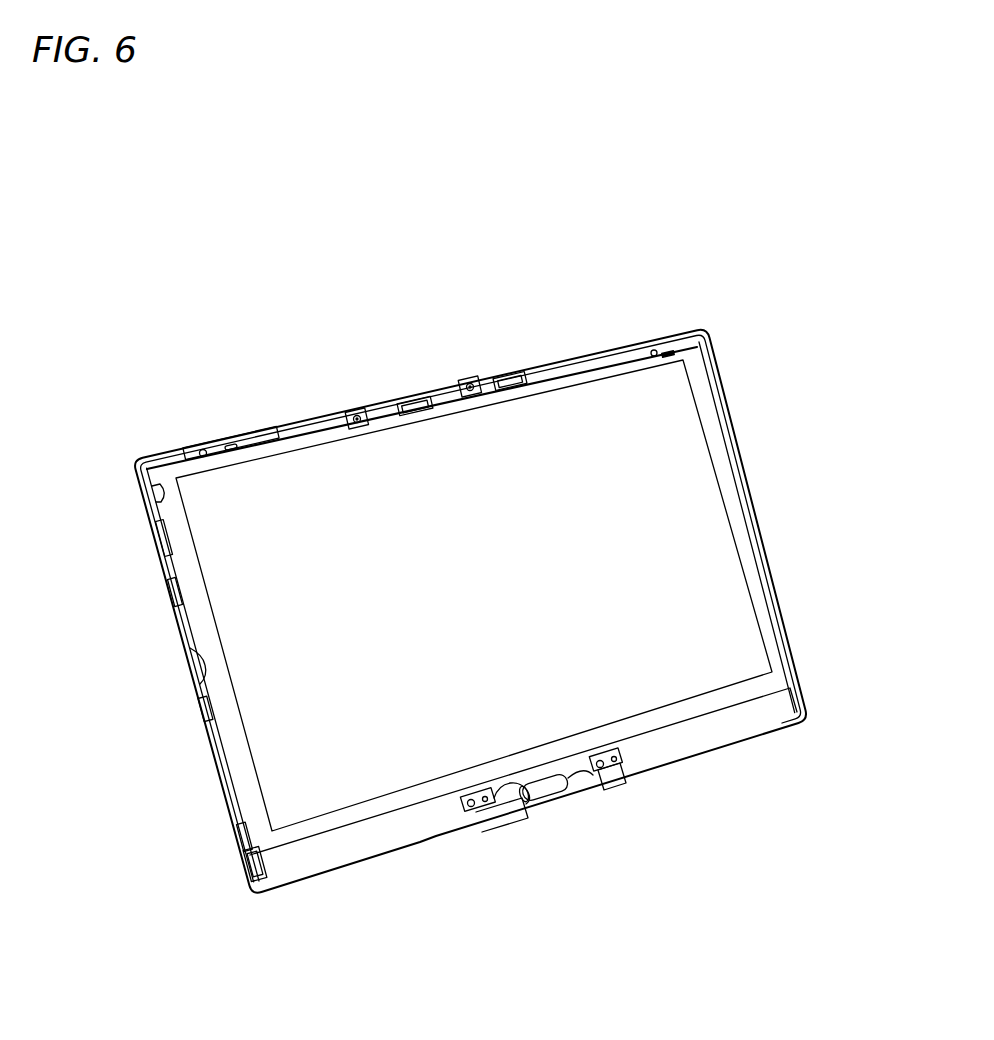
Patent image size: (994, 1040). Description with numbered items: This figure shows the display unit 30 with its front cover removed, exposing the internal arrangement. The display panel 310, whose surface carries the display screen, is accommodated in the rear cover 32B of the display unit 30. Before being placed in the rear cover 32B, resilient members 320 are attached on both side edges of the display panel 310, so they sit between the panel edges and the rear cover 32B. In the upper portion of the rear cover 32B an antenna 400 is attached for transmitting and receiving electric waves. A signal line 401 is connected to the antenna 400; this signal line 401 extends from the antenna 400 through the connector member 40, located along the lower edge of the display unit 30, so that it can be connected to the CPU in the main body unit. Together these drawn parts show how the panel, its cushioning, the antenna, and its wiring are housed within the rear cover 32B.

The display unit 30 is at (181, 663).
The display panel 310 is at (697, 459).
The resilient member 320 is at (731, 490).
The rear cover 32B is at (336, 413).
The antenna 400 is at (249, 443).
The connector member 40 is at (543, 792).
The signal line 401 is at (589, 793).